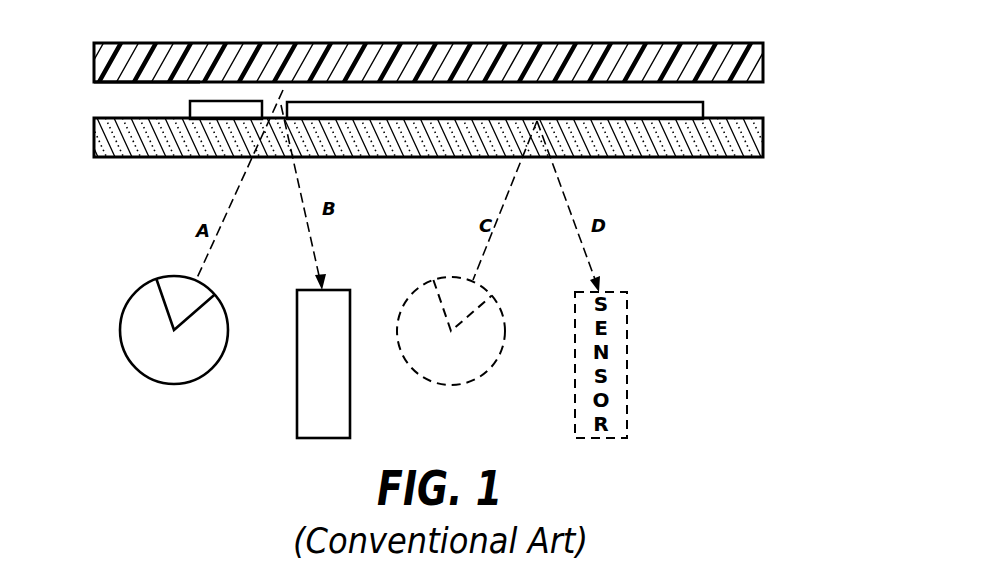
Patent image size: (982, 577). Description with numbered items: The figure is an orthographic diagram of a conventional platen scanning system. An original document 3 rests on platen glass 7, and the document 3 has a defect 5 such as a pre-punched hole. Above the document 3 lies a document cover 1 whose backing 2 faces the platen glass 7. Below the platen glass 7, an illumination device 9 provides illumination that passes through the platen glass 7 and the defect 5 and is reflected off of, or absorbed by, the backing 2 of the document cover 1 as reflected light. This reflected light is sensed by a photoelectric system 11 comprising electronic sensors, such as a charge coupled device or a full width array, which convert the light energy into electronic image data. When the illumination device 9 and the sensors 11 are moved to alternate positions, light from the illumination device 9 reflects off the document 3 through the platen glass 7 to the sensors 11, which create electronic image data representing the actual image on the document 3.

The document cover 1 is at (717, 44).
The backing 2 is at (120, 82).
The original document 3 is at (705, 110).
The defect 5 is at (284, 118).
The platen glass 7 is at (729, 158).
The illumination device 9 is at (170, 384).
The photoelectric system 11 is at (350, 395).